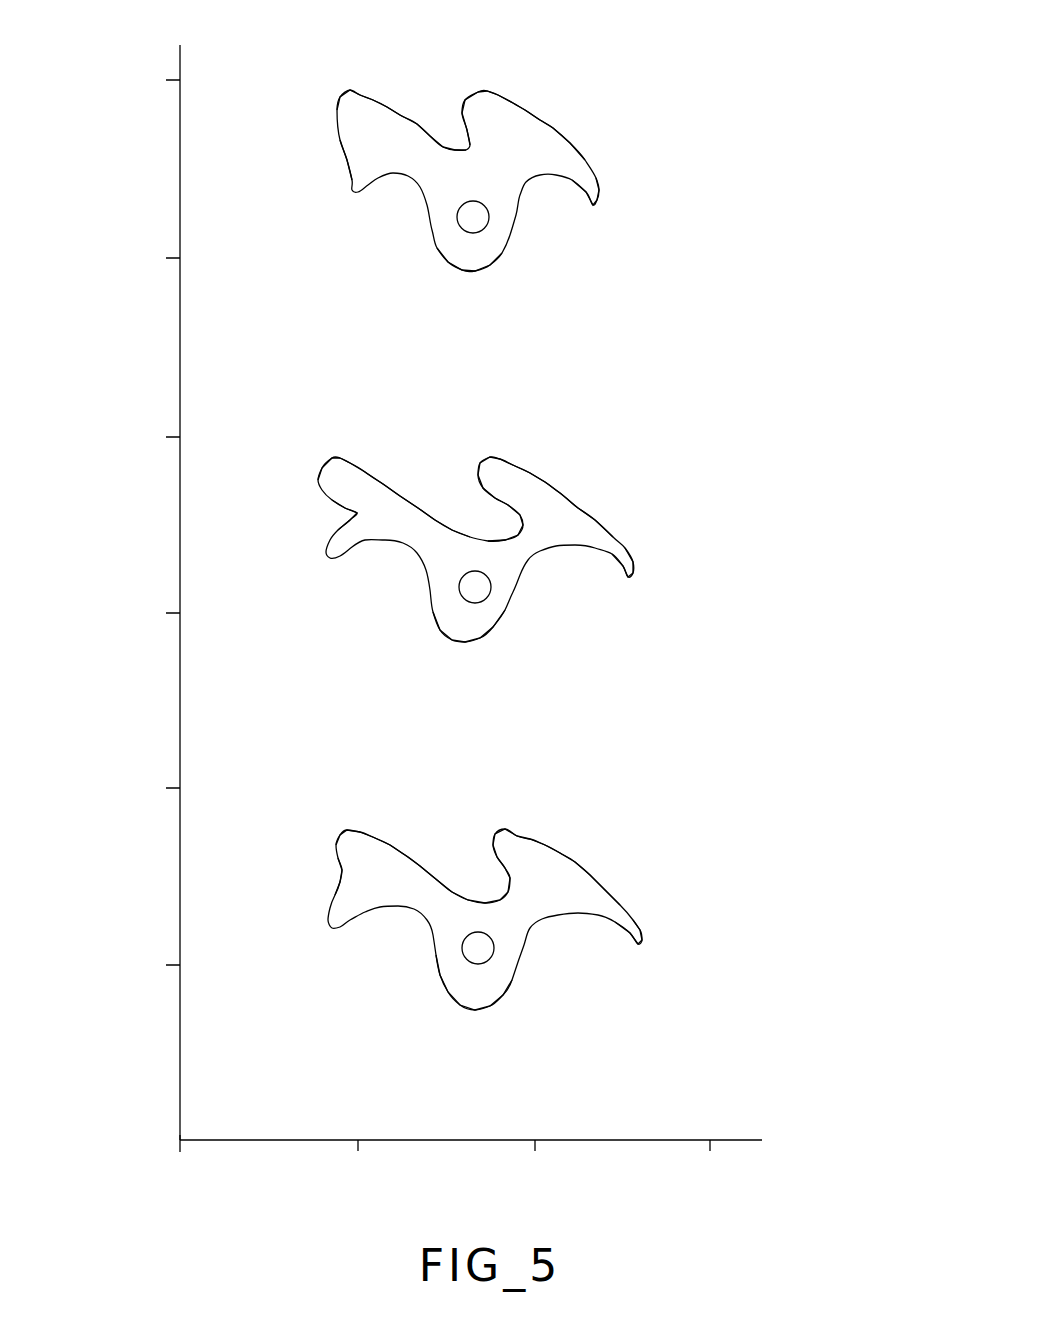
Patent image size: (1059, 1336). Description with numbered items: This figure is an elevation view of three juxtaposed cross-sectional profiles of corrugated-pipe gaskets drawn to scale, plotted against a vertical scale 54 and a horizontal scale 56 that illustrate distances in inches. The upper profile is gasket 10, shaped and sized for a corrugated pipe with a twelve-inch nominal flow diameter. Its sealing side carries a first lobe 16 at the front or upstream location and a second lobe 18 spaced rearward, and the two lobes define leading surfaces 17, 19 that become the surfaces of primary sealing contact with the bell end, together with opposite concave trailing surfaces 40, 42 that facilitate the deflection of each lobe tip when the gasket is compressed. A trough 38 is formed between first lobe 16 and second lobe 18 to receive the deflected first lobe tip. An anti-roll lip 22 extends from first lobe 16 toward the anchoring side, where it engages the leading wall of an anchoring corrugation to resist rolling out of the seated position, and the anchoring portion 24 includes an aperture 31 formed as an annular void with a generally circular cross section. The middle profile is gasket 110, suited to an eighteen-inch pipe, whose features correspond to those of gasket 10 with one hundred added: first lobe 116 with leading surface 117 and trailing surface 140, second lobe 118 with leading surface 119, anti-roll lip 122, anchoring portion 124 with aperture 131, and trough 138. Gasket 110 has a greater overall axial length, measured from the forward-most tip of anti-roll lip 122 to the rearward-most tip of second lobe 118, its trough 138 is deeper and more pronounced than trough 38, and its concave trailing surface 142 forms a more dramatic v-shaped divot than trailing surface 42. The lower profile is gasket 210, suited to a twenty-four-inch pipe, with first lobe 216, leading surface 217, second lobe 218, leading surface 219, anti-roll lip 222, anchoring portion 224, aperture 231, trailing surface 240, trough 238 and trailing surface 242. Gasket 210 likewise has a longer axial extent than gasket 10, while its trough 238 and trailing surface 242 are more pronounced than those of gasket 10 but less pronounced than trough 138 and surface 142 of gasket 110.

The gasket 10 is at (550, 87).
The first lobe 16 is at (493, 110).
The leading surface 17 is at (547, 127).
The second lobe 18 is at (347, 102).
The leading surface 19 is at (363, 95).
The anti-roll lip 22 is at (598, 188).
The anchoring portion 24 is at (480, 257).
The aperture 31 is at (477, 218).
The trough 38 is at (423, 110).
The concave trailing surface 40 is at (467, 127).
The concave trailing surface 42 is at (347, 145).
The scale 54 is at (179, 140).
The scale 56 is at (738, 1142).
The gasket 110 is at (580, 427).
The first lobe 116 is at (492, 470).
The leading surface 117 is at (547, 483).
The second lobe 118 is at (327, 467).
The leading surface 119 is at (357, 465).
The anti-roll lip 122 is at (630, 567).
The anchoring portion 124 is at (480, 627).
The aperture 131 is at (470, 597).
The trough 138 is at (432, 480).
The concave trailing surface 140 is at (507, 507).
The concave trailing surface 142 is at (358, 513).
The gasket 210 is at (600, 795).
The first lobe 216 is at (517, 840).
The leading surface 217 is at (553, 853).
The second lobe 218 is at (345, 833).
The leading surface 219 is at (377, 842).
The anti-roll lip 222 is at (630, 932).
The anchoring portion 224 is at (475, 987).
The aperture 231 is at (482, 953).
The trough 238 is at (450, 830).
The concave trailing surface 240 is at (507, 877).
The concave trailing surface 242 is at (340, 880).